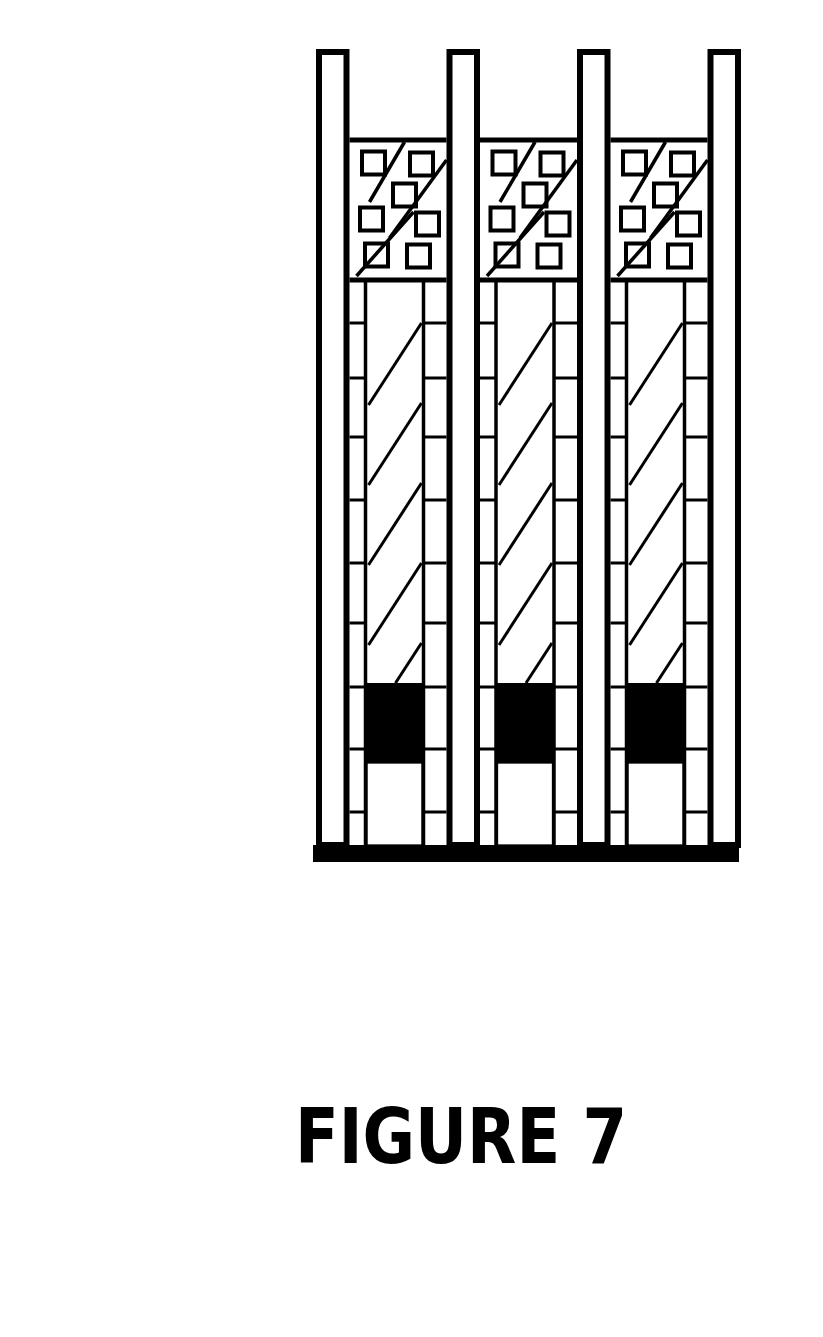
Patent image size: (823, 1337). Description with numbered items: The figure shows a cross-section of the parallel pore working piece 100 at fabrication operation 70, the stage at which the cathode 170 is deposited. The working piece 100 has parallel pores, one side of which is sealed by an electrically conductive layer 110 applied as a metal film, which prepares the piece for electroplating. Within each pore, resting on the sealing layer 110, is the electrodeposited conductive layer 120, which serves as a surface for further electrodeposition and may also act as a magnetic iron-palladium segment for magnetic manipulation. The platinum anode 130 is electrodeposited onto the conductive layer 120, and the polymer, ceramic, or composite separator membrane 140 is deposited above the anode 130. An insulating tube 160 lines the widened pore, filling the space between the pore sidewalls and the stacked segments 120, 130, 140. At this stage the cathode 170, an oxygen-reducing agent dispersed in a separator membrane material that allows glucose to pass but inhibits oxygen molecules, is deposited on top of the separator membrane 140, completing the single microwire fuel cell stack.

The parallel pore working piece 100 is at (434, 422).
The cathode 170 is at (372, 197).
The insulating tube 160 is at (367, 393).
The separator membrane 140 is at (397, 558).
The anode 130 is at (400, 717).
The conductive layer 120 is at (403, 827).
The conductive layer 110 is at (317, 850).
The fabrication operation 70 is at (526, 944).